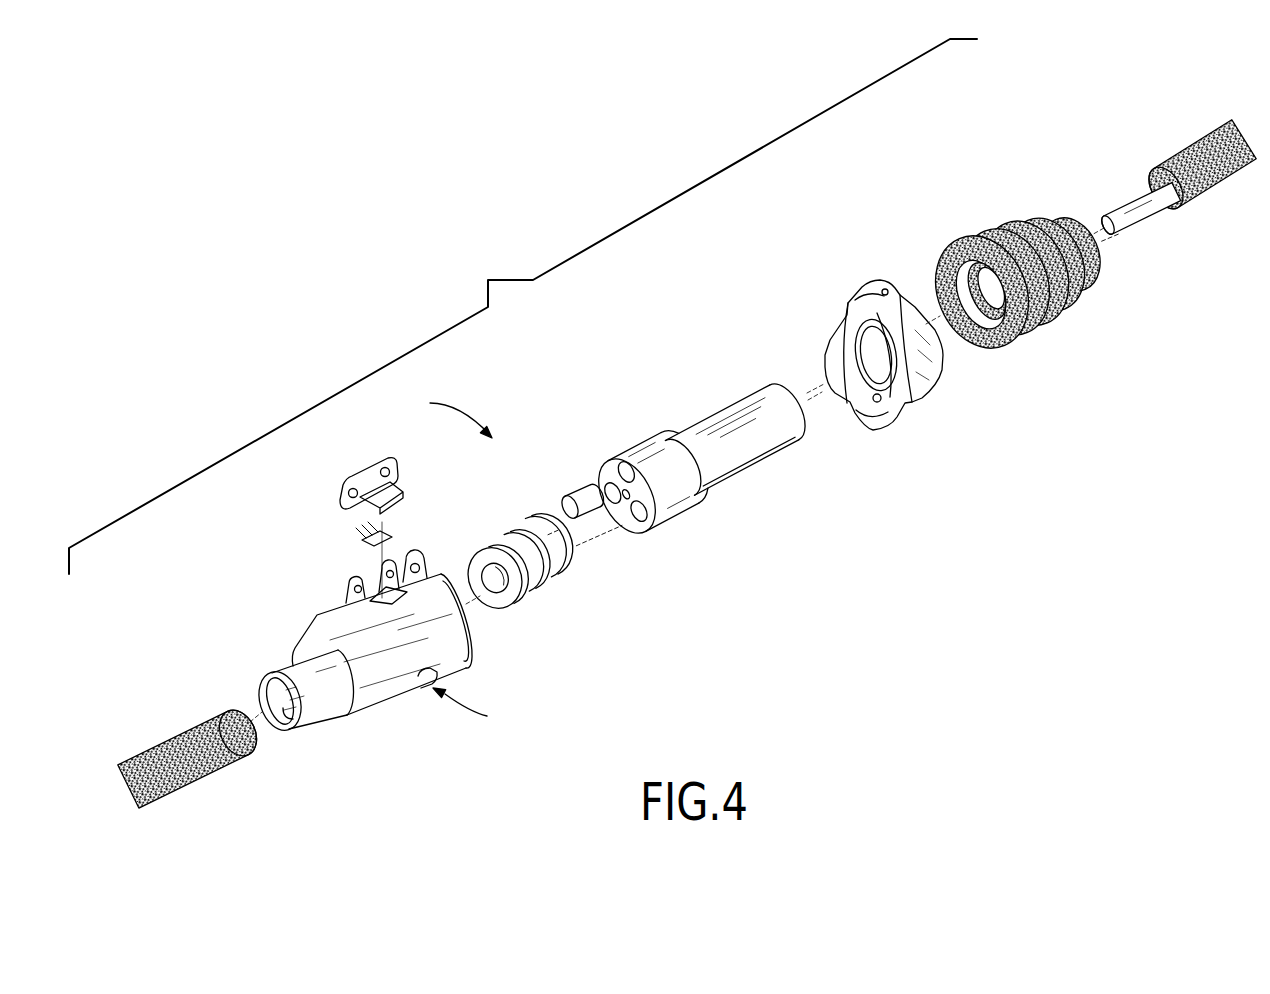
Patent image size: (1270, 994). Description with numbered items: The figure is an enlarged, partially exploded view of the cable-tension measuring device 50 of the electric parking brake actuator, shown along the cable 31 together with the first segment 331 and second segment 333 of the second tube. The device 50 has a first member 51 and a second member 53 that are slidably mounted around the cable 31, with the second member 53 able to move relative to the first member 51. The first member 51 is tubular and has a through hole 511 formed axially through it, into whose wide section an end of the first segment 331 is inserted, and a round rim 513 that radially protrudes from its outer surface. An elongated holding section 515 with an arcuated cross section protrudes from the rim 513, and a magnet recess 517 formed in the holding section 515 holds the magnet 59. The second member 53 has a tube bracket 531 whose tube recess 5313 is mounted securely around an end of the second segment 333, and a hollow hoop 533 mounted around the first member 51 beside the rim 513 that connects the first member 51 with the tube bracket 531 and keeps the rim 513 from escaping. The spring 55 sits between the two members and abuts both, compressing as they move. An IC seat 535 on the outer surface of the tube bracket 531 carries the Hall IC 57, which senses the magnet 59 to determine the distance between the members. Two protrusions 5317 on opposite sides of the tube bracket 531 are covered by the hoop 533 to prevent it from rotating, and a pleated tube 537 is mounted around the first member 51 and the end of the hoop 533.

The cable 31 is at (1140, 197).
The first segment 331 is at (1215, 143).
The second segment 333 is at (208, 725).
The cable-tension measuring device 50 is at (447, 413).
The first member 51 is at (748, 415).
The through hole 511 is at (633, 527).
The rim 513 is at (694, 497).
The holding section 515 is at (660, 445).
The magnet recess 517 is at (623, 470).
The second member 53 is at (473, 709).
The tube bracket 531 is at (312, 638).
The tube recess 5313 is at (296, 718).
The protrusions 5317 is at (423, 560).
The hoop 533 is at (922, 378).
The IC seat 535 is at (372, 475).
The pleated tube 537 is at (1040, 332).
The spring 55 is at (533, 585).
The Hall IC 57 is at (372, 540).
The magnet 59 is at (563, 500).